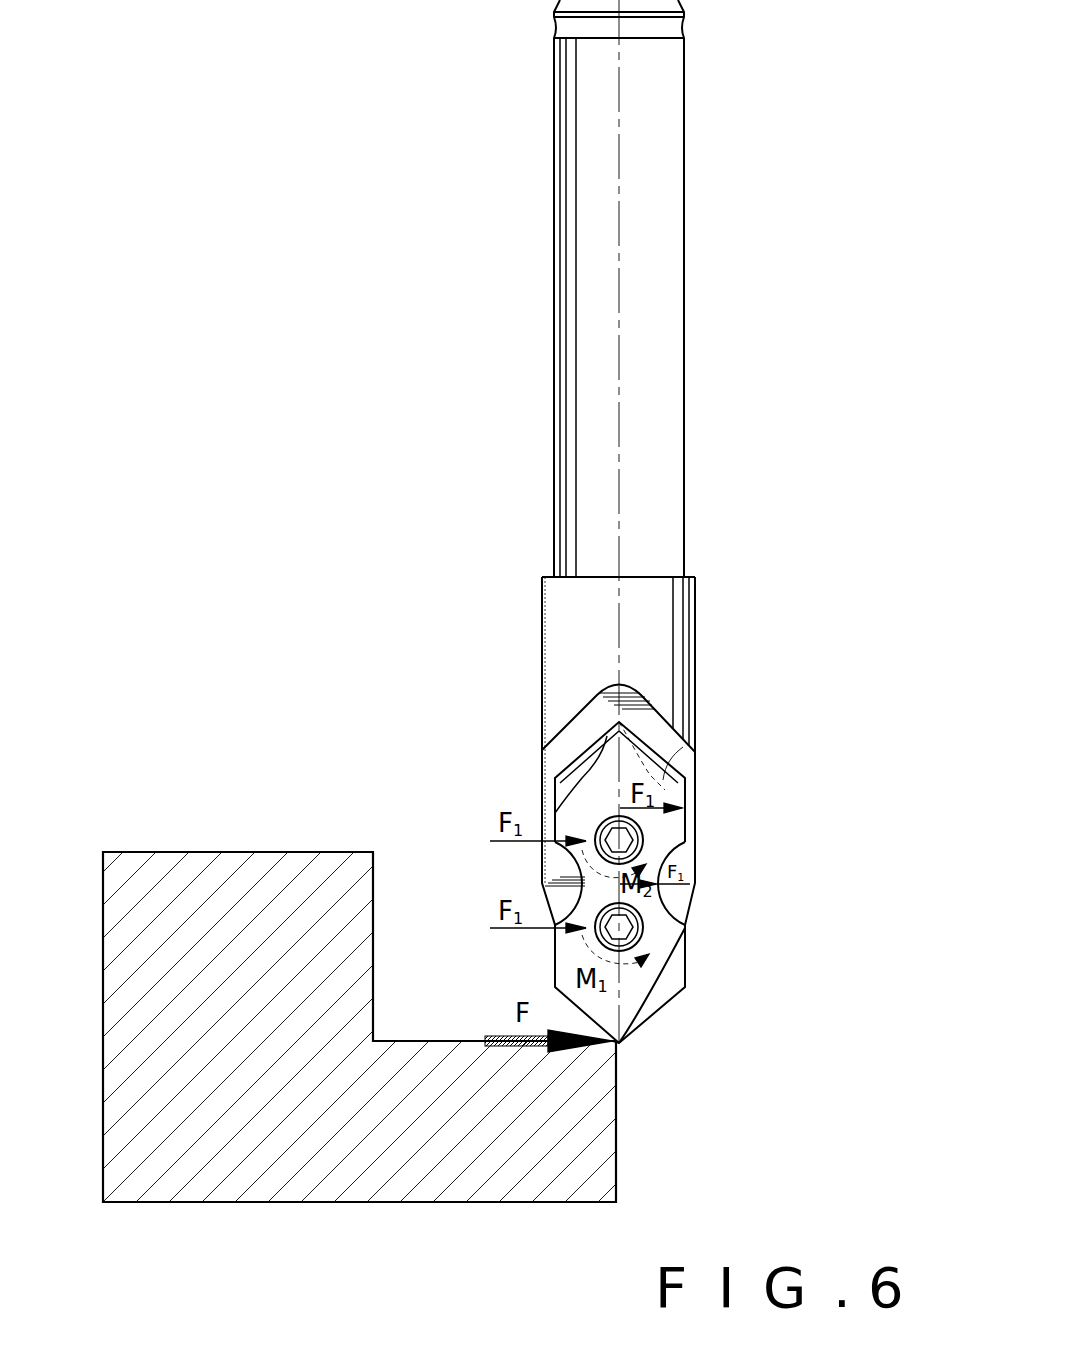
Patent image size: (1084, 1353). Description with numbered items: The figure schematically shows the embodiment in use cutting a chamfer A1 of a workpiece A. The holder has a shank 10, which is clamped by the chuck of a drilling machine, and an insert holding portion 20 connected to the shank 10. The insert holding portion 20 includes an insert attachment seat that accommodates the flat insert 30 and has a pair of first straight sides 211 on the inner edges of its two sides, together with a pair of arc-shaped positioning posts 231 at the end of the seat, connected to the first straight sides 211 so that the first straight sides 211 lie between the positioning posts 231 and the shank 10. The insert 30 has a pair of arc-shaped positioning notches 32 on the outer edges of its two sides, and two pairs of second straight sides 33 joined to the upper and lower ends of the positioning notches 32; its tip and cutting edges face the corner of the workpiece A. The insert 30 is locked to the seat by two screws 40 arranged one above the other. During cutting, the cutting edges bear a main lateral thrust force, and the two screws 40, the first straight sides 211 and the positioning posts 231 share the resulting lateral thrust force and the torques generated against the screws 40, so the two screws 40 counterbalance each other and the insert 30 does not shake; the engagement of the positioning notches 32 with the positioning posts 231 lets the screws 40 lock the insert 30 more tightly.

The shank 10 is at (685, 267).
The insert holding portion 20 is at (542, 618).
The insert 30 is at (612, 785).
The positioning notches 32 is at (695, 862).
The second straight sides 33 is at (690, 812).
The screws 40 is at (602, 823).
The first straight sides 211 is at (663, 755).
The positioning posts 231 is at (680, 902).
The workpiece A is at (233, 852).
The chamfer A1 is at (596, 1052).